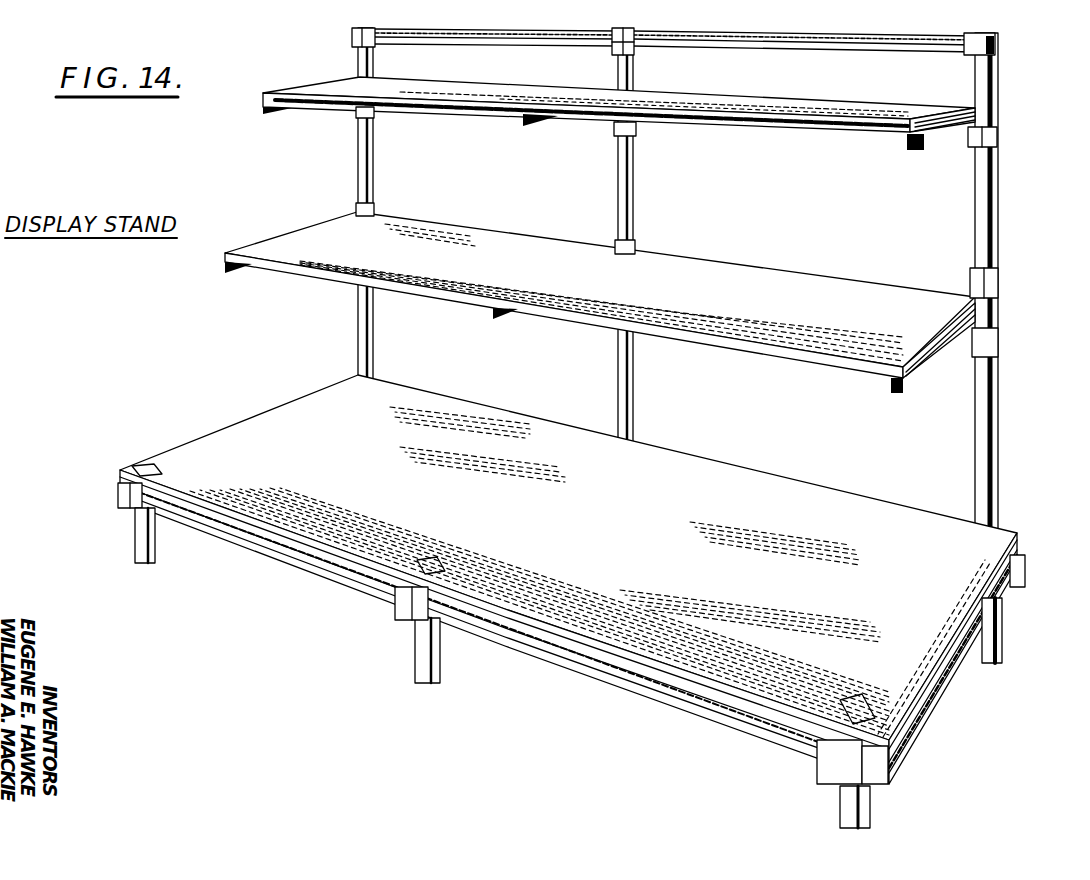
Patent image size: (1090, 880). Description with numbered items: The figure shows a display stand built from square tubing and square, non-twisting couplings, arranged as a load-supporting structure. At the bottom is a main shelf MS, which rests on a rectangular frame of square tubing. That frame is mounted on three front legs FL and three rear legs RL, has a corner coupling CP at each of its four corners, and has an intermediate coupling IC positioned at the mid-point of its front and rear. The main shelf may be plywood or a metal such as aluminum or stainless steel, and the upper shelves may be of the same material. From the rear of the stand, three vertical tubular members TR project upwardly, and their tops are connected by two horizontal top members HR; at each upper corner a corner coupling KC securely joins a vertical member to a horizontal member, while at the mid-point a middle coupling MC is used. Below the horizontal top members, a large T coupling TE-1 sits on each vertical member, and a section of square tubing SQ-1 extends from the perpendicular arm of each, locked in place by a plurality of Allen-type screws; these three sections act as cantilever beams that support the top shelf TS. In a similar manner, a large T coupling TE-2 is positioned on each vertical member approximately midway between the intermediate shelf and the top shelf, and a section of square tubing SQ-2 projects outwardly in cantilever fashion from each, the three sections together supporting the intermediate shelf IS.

The vertical tubular member TR is at (358, 355).
The horizontal top member HR is at (458, 38).
The corner coupling KC is at (351, 42).
The middle coupling MC is at (636, 40).
The top shelf TS is at (534, 70).
The square tubing section SQ-1 is at (268, 110).
The large T coupling TE-1 is at (373, 113).
The intermediate shelf IS is at (600, 295).
The square tubing section SQ-2 is at (232, 271).
The large T coupling TE-2 is at (356, 210).
The main shelf MS is at (568, 579).
The corner coupling CP is at (114, 499).
The front leg FL is at (155, 547).
The intermediate coupling IC is at (395, 614).
The rear leg RL is at (1002, 641).